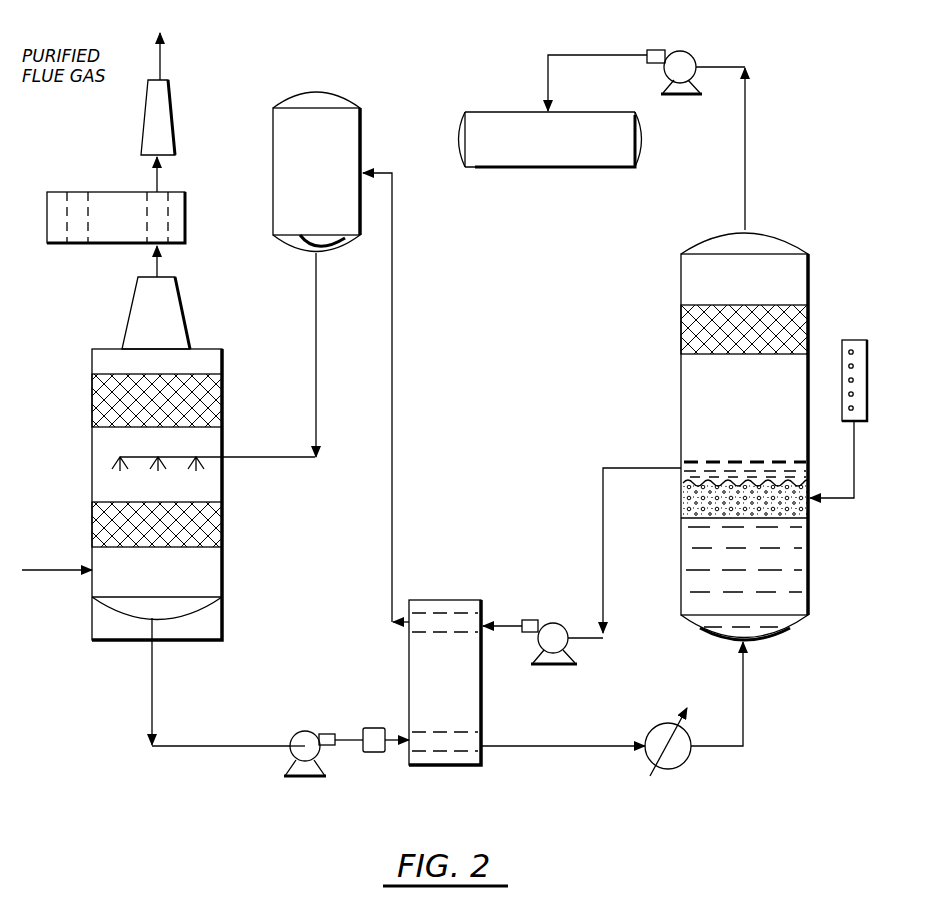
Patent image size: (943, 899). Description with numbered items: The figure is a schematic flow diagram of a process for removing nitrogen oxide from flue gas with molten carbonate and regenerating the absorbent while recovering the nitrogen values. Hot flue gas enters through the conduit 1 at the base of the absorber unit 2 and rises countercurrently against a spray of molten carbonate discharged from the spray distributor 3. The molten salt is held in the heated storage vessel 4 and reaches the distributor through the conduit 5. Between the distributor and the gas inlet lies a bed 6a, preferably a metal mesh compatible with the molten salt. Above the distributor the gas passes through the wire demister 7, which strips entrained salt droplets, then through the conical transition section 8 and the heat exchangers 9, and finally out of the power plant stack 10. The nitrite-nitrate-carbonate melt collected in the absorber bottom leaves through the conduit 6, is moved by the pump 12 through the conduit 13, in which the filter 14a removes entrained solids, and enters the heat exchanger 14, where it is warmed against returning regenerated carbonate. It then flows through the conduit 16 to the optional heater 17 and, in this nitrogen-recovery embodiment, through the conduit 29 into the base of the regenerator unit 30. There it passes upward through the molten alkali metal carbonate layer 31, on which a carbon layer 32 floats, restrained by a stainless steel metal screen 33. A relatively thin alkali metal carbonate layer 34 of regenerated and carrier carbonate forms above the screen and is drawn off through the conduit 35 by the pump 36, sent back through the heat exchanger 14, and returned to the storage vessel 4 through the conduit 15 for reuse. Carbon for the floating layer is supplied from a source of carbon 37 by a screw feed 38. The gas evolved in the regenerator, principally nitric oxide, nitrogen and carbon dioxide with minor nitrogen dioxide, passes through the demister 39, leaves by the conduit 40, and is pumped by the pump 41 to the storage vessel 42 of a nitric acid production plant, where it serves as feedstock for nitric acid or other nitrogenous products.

The conduit 1 is at (88, 576).
The absorber unit 2 is at (228, 547).
The spray distributor 3 is at (140, 458).
The storage vessel 4 is at (362, 122).
The conduit 5 is at (317, 345).
The conduit 6 is at (150, 691).
The bed 6a is at (213, 515).
The wire demister 7 is at (95, 403).
The conical transition section 8 is at (138, 303).
The heat exchangers 9 is at (178, 203).
The power plant stack 10 is at (166, 106).
The pump 12 is at (310, 776).
The conduit 13 is at (362, 729).
The heat exchanger 14 is at (409, 672).
The filter 14a is at (375, 754).
The conduit 15 is at (393, 254).
The conduit 16 is at (578, 746).
The heater 17 is at (668, 723).
The conduit 29 is at (744, 694).
The regenerator unit 30 is at (680, 372).
The molten alkali metal carbonate layer 31 is at (798, 555).
The carbon layer 32 is at (688, 510).
The metal screen 33 is at (682, 484).
The alkali metal carbonate layer 34 is at (698, 456).
The conduit 35 is at (600, 547).
The pump 36 is at (568, 655).
The source of carbon 37 is at (856, 422).
The screw feed 38 is at (853, 448).
The demister 39 is at (686, 319).
The conduit 40 is at (748, 120).
The pump 41 is at (690, 53).
The storage vessel 42 is at (585, 156).